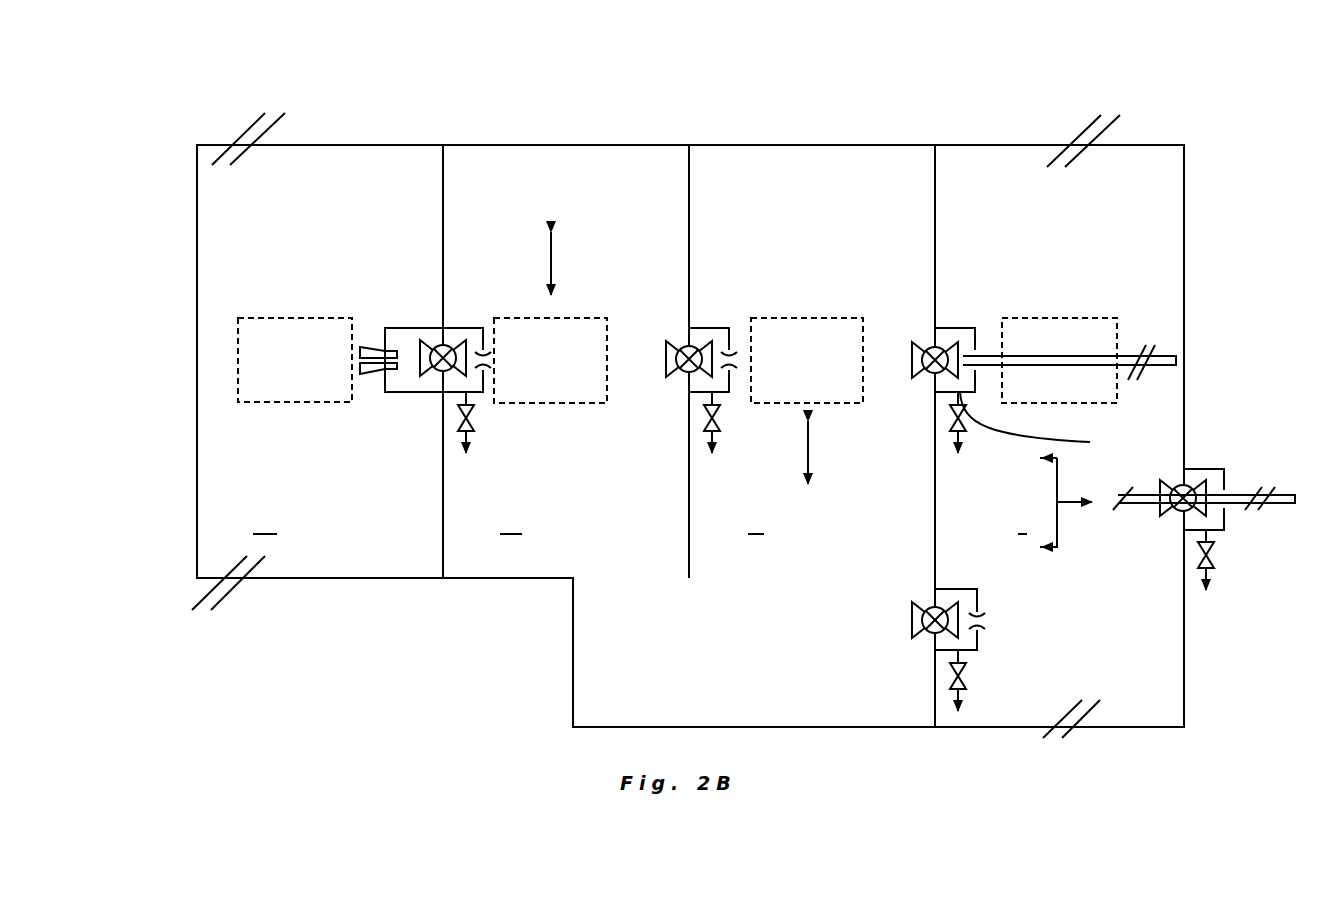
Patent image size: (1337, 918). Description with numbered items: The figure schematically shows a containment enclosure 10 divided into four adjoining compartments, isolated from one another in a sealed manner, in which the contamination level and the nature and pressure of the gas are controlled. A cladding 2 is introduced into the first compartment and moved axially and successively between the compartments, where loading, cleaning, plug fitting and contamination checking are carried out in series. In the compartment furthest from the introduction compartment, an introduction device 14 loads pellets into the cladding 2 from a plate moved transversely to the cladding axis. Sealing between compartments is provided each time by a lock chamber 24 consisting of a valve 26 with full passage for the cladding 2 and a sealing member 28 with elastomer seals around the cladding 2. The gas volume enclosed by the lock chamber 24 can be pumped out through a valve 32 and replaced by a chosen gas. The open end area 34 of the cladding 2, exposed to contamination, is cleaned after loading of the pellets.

The containment enclosure 10 is at (785, 126).
The cladding 2 is at (1128, 357).
The introduction device 14 is at (371, 393).
The lock chamber 24 is at (453, 317).
The valve 26 is at (432, 371).
The sealing member 28 is at (485, 349).
The valve 32 is at (472, 418).
The open end area 34 is at (1039, 428).